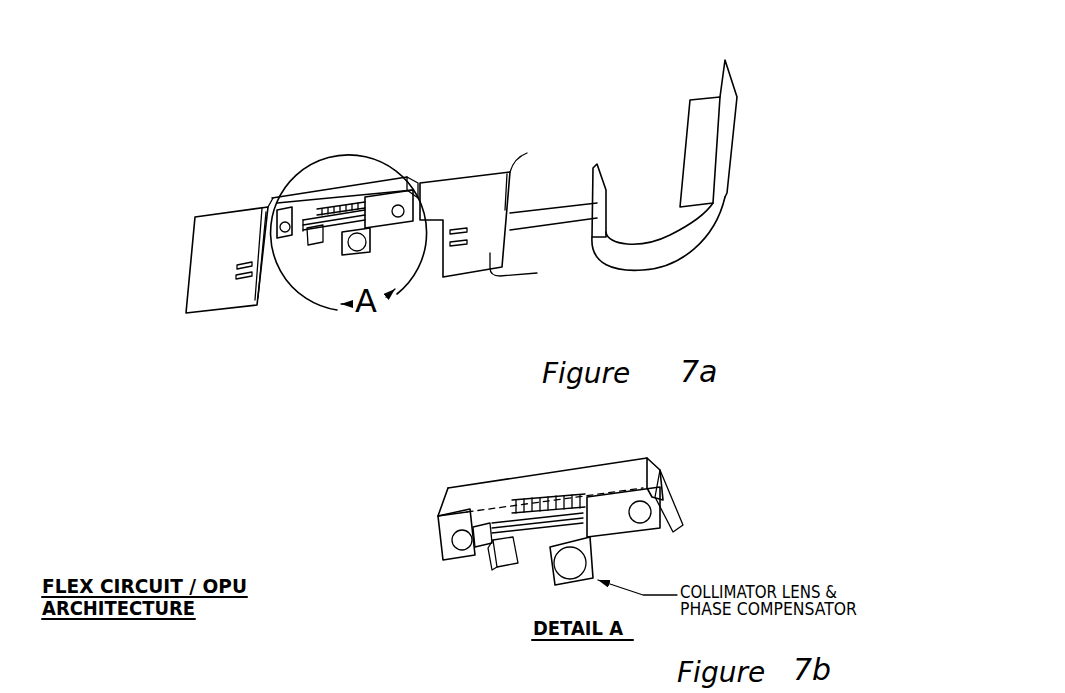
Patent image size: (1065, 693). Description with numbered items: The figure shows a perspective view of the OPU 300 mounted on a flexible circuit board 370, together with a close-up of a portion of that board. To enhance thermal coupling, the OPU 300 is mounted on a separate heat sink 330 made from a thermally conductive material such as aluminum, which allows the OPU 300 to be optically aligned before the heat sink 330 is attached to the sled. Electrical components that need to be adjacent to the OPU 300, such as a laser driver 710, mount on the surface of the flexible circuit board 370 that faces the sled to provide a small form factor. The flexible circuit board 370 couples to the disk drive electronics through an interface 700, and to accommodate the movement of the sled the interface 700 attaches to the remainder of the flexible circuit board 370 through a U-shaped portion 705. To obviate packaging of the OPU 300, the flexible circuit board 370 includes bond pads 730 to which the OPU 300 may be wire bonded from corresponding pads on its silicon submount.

In FIG. 7A, the laser driver 710 is at (456, 218).
In FIG. 7A, the flexible circuit board 370 is at (508, 197).
In FIG. 7A, the interface 700 is at (735, 156).
In FIG. 7A, the U-shaped portion 705 is at (693, 250).
In FIG. 7A, the heat sink 330 is at (394, 238).
In FIG. 7A, the OPU 300 is at (313, 252).
In FIG. 7B, the bond pads 730 is at (538, 500).